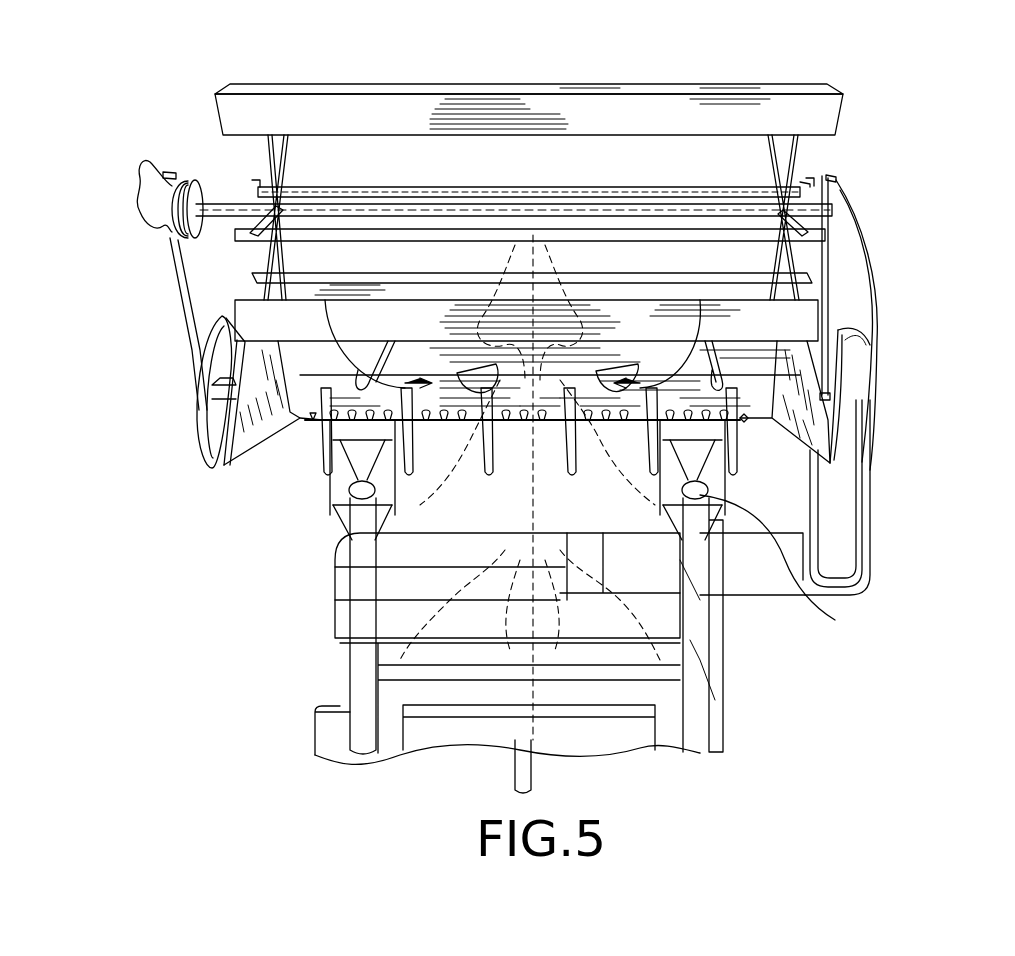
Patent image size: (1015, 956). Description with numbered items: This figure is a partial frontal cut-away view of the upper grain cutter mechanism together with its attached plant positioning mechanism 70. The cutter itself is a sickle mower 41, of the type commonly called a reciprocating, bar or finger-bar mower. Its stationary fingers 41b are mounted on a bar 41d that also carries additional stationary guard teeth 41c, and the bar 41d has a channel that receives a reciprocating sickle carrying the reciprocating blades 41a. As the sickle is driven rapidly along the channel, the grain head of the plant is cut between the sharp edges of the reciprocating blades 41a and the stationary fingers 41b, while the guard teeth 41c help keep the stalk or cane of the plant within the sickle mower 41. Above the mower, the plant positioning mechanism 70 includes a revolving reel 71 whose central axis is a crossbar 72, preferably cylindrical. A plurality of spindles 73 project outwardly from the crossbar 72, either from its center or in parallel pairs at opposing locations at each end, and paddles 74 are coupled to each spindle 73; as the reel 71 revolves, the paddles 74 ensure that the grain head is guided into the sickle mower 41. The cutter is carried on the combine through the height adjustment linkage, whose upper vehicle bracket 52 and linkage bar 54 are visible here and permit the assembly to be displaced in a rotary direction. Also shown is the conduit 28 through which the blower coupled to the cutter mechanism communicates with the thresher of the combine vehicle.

The conduit 28 is at (872, 468).
The sickle mower 41 is at (297, 425).
The reciprocating blades 41a is at (486, 475).
The stationary fingers 41b is at (407, 475).
The guard teeth 41c is at (318, 462).
The bar 41d is at (757, 418).
The upper vehicle bracket 52 is at (822, 592).
The linkage bar 54 is at (700, 723).
The plant positioning mechanism 70 is at (120, 238).
The revolving reel 71 is at (870, 255).
The crossbar 72 is at (225, 200).
The spindles 73 is at (288, 142).
The paddles 74 is at (838, 115).